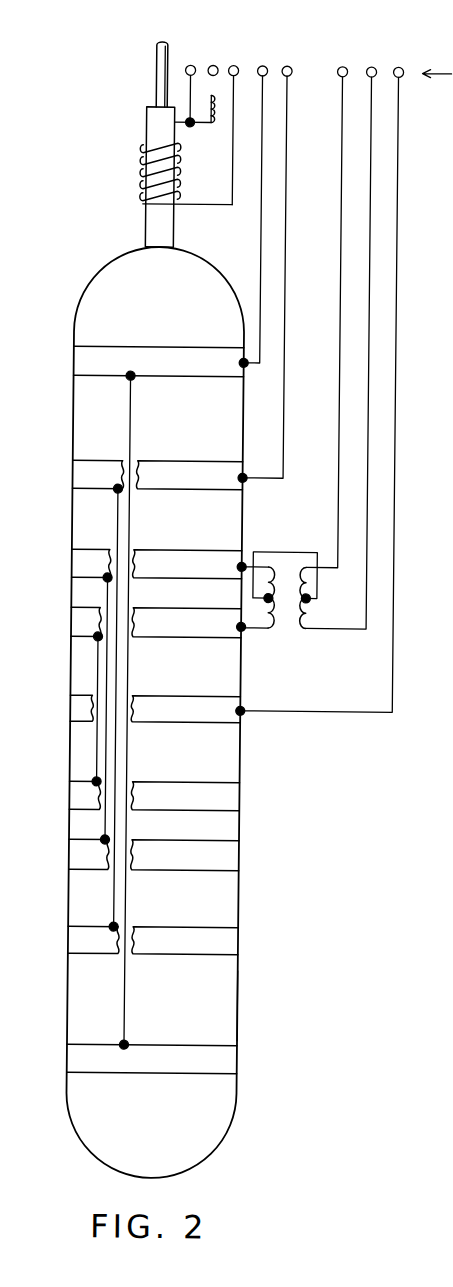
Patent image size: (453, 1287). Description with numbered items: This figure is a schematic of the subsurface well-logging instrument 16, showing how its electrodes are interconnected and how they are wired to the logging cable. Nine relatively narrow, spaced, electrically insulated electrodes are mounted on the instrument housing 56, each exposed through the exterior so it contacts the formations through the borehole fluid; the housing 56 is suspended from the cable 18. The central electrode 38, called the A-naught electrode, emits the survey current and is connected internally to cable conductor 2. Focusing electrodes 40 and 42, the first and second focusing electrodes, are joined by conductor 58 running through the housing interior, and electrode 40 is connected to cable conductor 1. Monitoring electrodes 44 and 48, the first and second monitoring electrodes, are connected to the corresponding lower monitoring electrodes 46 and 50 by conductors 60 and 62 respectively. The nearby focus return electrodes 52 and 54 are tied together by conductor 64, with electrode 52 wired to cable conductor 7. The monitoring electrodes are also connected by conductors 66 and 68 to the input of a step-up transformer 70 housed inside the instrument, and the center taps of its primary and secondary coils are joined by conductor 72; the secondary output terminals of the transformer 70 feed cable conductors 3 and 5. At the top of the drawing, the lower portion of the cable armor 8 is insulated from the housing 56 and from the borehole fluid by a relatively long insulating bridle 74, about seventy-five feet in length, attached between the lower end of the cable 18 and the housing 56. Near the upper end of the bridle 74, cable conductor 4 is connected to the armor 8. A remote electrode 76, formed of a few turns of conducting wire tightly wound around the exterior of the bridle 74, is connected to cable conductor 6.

The tube envelope 16 is at (247, 1095).
The cable 18 is at (151, 57).
The insulating bridle 74 is at (144, 240).
The remote electrode 76 is at (143, 174).
The cable conductor 4 is at (193, 83).
The cable armor 8 is at (209, 95).
The cable conductor 6 is at (233, 123).
The cable conductor 7 is at (256, 202).
The cable conductor 1 is at (268, 259).
The cable conductor 3 is at (327, 304).
The cable conductor 5 is at (341, 335).
The cable conductor 2 is at (322, 377).
The focus return electrode 52 is at (246, 367).
The conductor 64 is at (133, 428).
The focusing electrode 40 is at (247, 472).
The conductor 58 is at (118, 522).
The monitoring electrode 48 is at (203, 550).
The conductor 62 is at (108, 590).
The monitoring electrode 44 is at (245, 631).
The conductor 60 is at (100, 667).
The electrode 38 is at (246, 716).
The lower monitoring electrode 46 is at (244, 800).
The lower monitoring electrode 50 is at (244, 860).
The focusing electrode 42 is at (244, 945).
The instrument housing 56 is at (244, 993).
The focus return electrode 54 is at (244, 1057).
The conductor 66 is at (268, 566).
The conductor 68 is at (272, 627).
The conductor 72 is at (302, 551).
The step-up transformer 70 is at (299, 629).